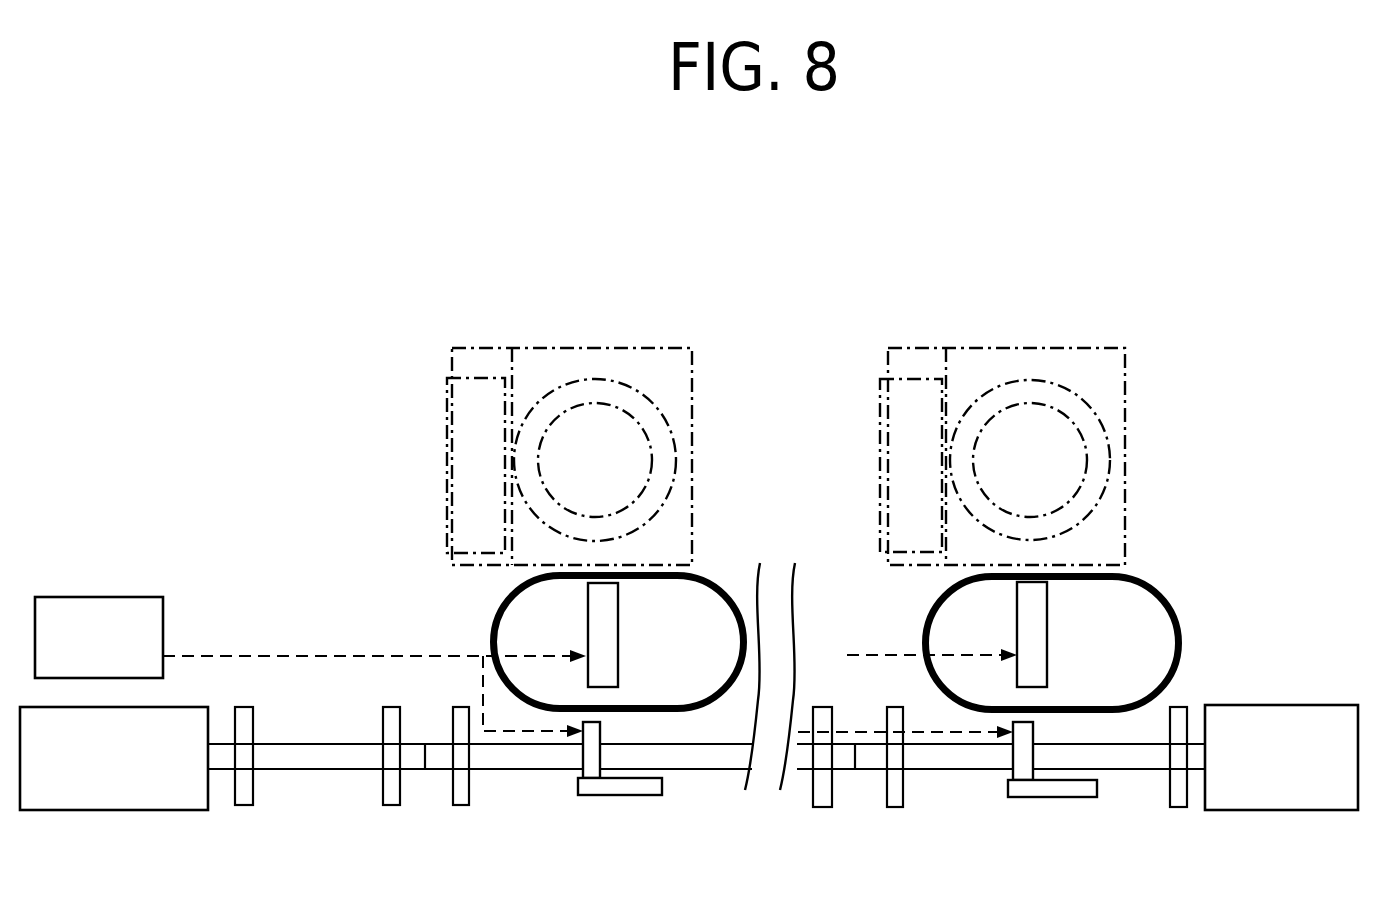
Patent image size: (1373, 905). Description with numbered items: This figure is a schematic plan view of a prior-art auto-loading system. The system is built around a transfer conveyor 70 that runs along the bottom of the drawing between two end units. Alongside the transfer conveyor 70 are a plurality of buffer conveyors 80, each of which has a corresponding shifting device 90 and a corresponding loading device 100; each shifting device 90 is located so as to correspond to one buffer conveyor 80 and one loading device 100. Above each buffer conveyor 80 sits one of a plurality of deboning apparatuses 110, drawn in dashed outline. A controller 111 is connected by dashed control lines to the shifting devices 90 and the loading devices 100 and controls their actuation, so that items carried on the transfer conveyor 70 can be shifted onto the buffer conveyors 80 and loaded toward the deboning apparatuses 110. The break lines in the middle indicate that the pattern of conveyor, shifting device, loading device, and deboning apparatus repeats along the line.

The transfer conveyor 70 is at (307, 770).
The buffer conveyor 80 is at (493, 627).
The shifting device 90 is at (582, 747).
The loading device 100 is at (618, 668).
The deboning apparatus 110 is at (568, 350).
The controller 111 is at (163, 615).